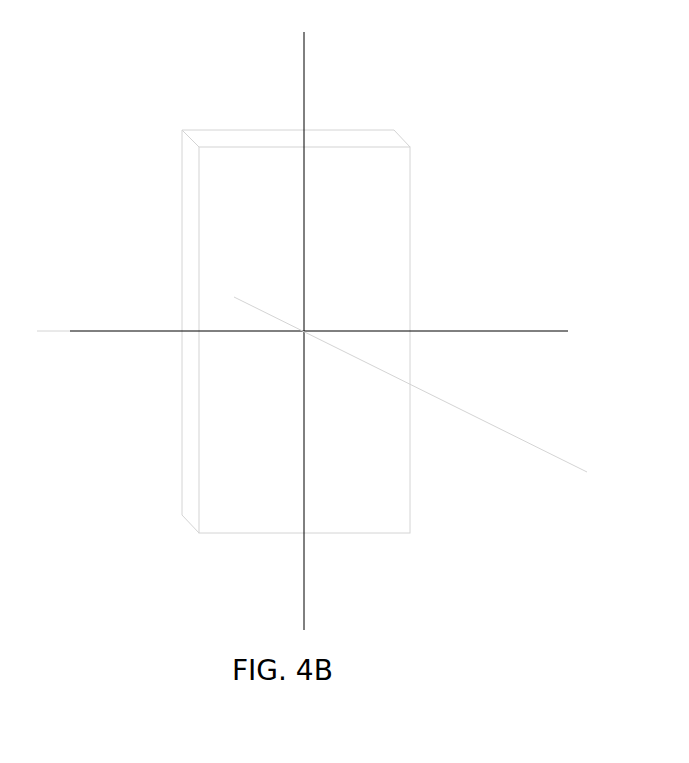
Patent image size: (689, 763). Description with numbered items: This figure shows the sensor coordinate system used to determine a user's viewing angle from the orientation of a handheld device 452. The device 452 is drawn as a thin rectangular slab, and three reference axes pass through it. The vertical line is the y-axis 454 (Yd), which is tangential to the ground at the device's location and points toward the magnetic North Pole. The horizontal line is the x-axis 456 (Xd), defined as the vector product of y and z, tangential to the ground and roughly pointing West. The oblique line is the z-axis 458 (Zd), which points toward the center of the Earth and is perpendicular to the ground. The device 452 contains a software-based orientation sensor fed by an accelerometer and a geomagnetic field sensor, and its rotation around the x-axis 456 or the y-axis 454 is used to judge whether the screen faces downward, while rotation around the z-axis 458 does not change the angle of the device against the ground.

The device 452 is at (410, 187).
The y-axis 454 is at (304, 92).
The x-axis 456 is at (520, 331).
The z-axis 458 is at (567, 462).